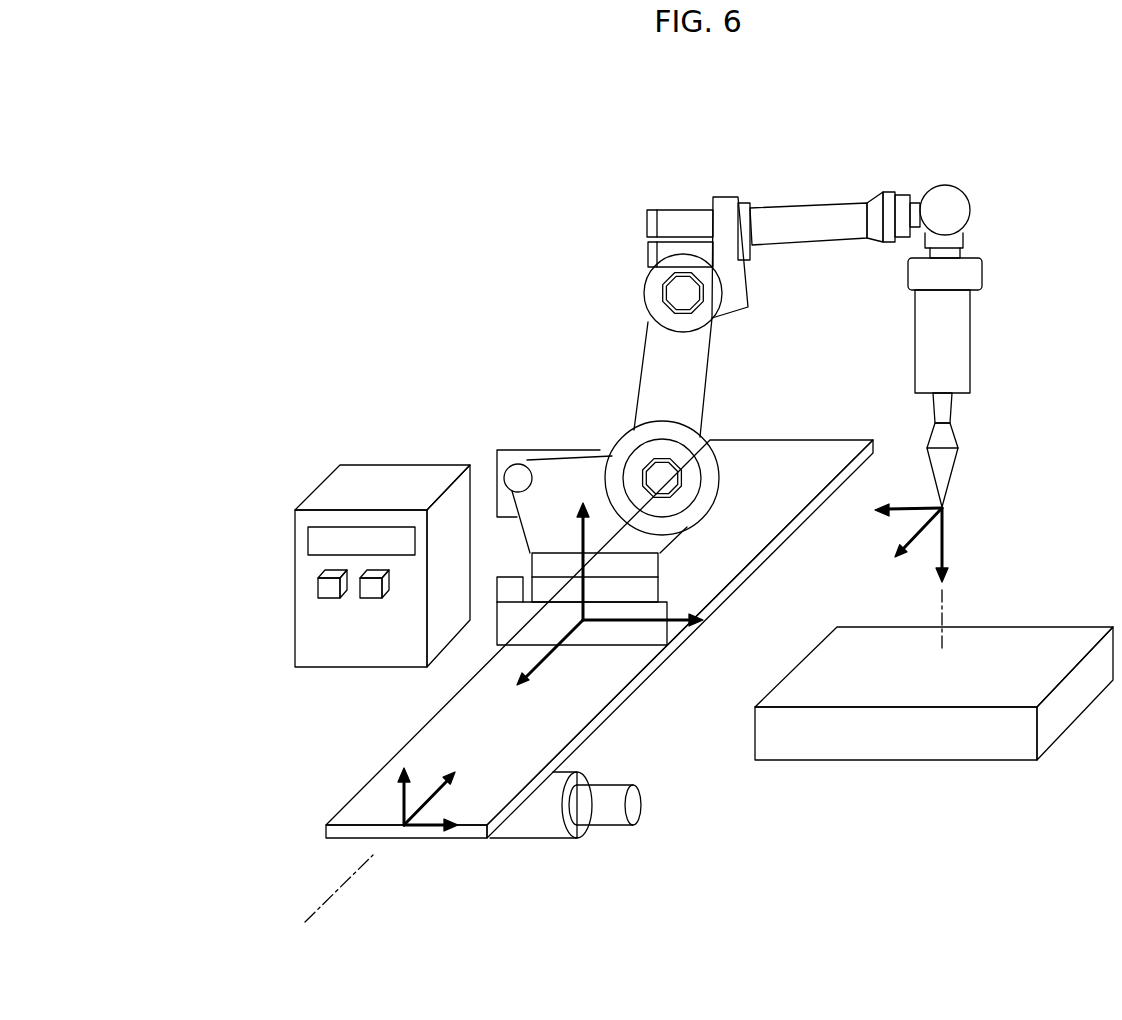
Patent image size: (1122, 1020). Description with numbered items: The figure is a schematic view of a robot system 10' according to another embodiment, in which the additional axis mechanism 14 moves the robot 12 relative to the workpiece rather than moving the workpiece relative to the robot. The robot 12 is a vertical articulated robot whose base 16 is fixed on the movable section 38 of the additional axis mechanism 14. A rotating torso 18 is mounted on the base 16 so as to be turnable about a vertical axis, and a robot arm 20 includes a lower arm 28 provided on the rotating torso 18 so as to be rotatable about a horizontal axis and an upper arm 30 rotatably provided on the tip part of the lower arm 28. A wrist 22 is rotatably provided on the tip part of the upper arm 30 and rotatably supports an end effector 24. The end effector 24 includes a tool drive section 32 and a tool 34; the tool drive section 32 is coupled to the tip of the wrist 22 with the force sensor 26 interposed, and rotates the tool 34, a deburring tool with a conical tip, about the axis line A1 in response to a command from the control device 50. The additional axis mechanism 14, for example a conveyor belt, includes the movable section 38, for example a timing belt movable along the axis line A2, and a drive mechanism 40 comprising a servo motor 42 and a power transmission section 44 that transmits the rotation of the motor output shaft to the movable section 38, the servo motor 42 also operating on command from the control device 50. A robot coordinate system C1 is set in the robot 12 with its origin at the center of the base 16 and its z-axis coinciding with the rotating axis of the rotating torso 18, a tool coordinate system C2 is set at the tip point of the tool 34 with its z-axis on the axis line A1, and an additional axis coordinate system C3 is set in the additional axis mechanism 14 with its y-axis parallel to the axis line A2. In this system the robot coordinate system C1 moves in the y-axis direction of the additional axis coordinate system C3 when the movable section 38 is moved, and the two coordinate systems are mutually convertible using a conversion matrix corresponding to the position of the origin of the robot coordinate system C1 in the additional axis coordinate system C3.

The robot system 10' is at (664, 506).
The robot 12 is at (605, 167).
The additional axis mechanism 14 is at (291, 852).
The base 16 is at (633, 637).
The rotating torso 18 is at (563, 472).
The robot arm 20 is at (738, 182).
The wrist 22 is at (960, 240).
The end effector 24 is at (1018, 384).
The force sensor 26 is at (975, 276).
The lower arm 28 is at (663, 357).
The upper arm 30 is at (812, 218).
The tool drive section 32 is at (964, 328).
The tool 34 is at (958, 449).
The movable section 38 is at (773, 457).
The drive mechanism 40 is at (596, 864).
The servo motor 42 is at (634, 805).
The power transmission section 44 is at (538, 828).
The control device 50 is at (375, 480).
The robot coordinate system C1 is at (550, 662).
The tool coordinate system C2 is at (943, 527).
The additional axis coordinate system C3 is at (428, 826).
The axis line A1 is at (943, 617).
The axis line A2 is at (338, 892).